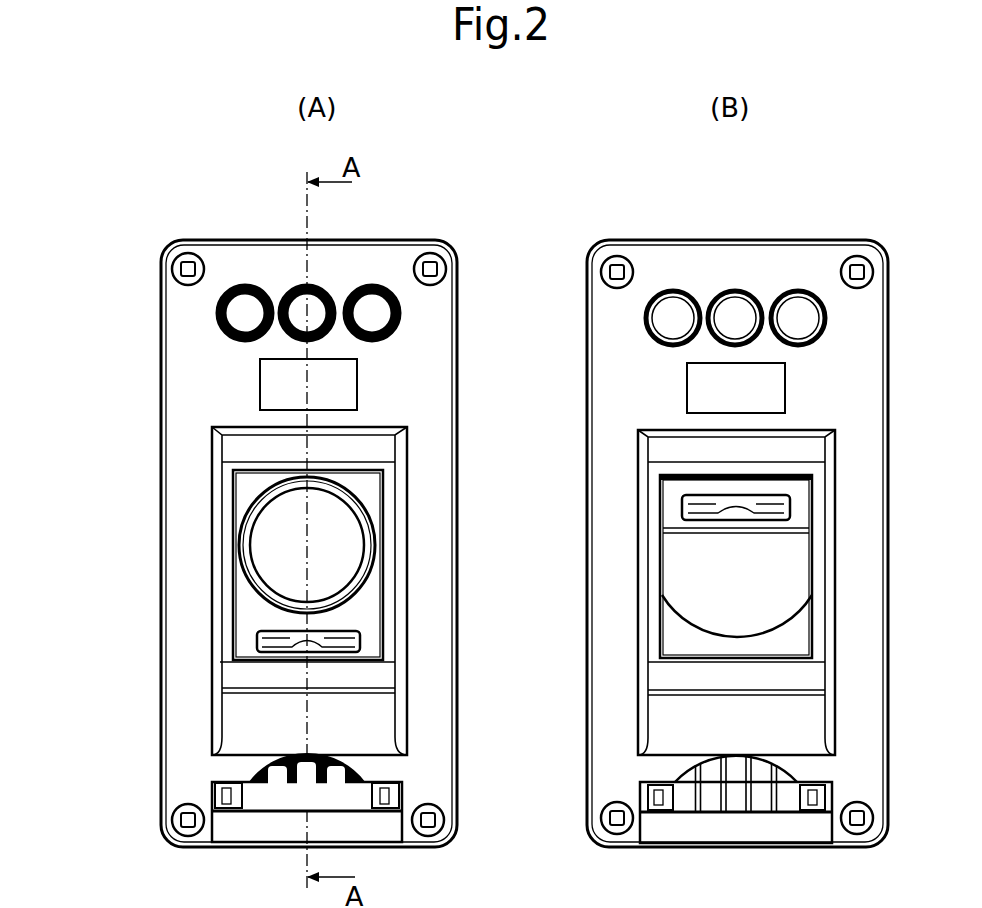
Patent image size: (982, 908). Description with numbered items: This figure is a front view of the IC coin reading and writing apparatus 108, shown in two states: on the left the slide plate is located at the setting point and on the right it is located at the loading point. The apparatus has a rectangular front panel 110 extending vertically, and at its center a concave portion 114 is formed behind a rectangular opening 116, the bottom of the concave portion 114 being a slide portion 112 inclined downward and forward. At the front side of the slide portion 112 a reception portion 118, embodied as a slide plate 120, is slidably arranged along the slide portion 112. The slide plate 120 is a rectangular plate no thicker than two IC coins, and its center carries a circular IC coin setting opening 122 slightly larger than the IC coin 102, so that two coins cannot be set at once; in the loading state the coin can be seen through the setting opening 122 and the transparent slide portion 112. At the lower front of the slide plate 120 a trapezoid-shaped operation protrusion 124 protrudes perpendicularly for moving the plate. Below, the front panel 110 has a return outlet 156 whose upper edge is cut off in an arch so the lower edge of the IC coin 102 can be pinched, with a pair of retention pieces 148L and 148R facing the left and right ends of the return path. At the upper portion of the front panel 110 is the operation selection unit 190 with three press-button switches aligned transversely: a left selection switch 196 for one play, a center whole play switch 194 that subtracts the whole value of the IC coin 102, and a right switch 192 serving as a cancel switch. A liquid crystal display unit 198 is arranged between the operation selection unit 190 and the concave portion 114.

The IC coin 102 is at (267, 546).
The IC coin reading and writing apparatus 108 is at (482, 205).
The front panel 110 is at (615, 410).
The slide portion 112 is at (687, 638).
The concave portion 114 is at (660, 445).
The rectangular opening 116 is at (636, 483).
The reception portion 118 is at (240, 627).
The slide plate 120 is at (677, 507).
The IC coin setting opening 122 is at (244, 503).
The operation protrusion 124 is at (727, 512).
The left retention piece 148L is at (222, 790).
The right retention piece 148R is at (393, 787).
The return outlet 156 is at (262, 808).
The operation selection unit 190 is at (503, 229).
The right switch 192 is at (372, 305).
The whole play switch 194 is at (305, 307).
The left selection switch 196 is at (245, 308).
The display unit 198 is at (687, 377).